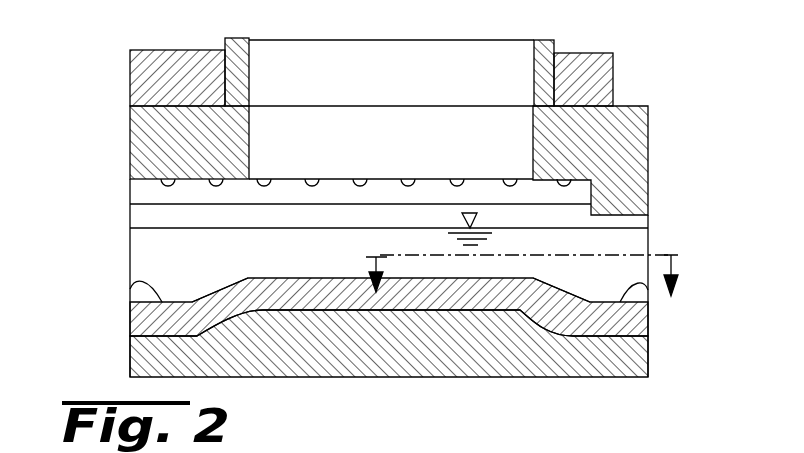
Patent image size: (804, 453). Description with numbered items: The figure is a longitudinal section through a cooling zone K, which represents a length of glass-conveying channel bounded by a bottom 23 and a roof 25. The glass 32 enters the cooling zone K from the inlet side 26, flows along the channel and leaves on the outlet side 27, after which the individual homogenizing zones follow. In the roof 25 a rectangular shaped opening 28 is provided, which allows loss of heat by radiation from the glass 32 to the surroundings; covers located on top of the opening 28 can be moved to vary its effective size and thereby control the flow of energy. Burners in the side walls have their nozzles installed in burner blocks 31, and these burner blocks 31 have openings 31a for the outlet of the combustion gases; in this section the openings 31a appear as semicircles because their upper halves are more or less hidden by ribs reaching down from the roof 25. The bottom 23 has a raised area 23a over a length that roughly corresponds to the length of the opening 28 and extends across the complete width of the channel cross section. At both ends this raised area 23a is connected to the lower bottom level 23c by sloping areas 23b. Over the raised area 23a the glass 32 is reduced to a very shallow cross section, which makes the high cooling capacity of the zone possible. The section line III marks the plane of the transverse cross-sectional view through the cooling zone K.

The bottom 23 is at (520, 377).
The raised area 23a is at (290, 279).
The sloping areas 23b is at (216, 289).
The lower bottom level 23c is at (130, 288).
The roof 25 is at (142, 142).
The inlet side 26 is at (130, 254).
The outlet side 27 is at (648, 238).
The opening 28 is at (388, 60).
The burner blocks 31 is at (323, 159).
The openings 31a is at (405, 178).
The glass 32 is at (145, 238).
The section line III is at (522, 267).
The cooling zone K is at (678, 87).